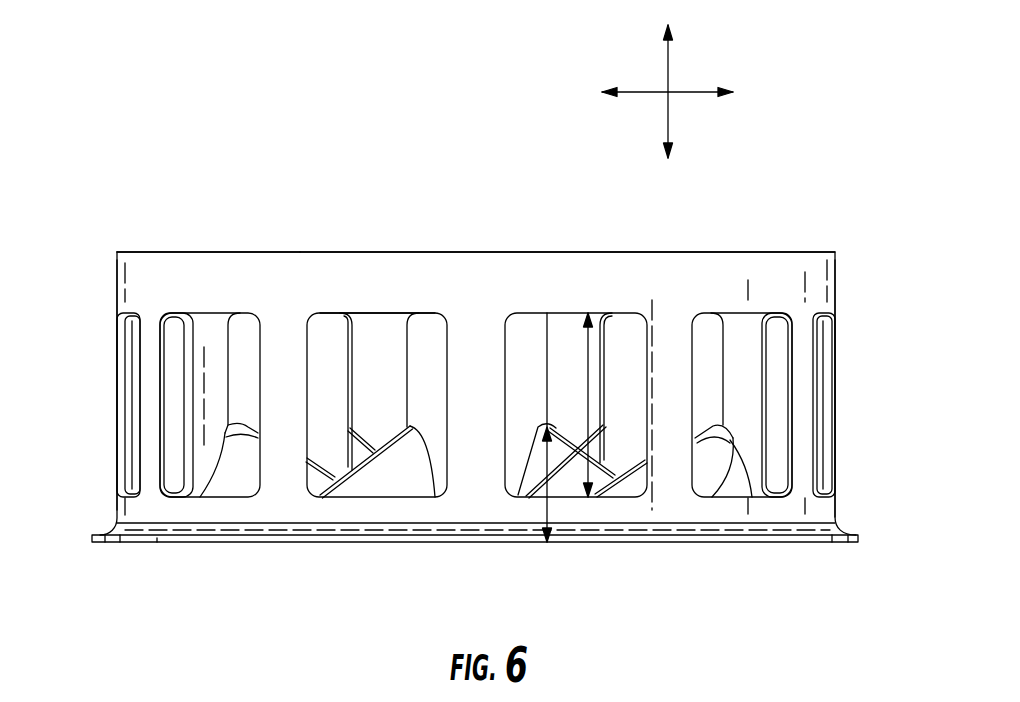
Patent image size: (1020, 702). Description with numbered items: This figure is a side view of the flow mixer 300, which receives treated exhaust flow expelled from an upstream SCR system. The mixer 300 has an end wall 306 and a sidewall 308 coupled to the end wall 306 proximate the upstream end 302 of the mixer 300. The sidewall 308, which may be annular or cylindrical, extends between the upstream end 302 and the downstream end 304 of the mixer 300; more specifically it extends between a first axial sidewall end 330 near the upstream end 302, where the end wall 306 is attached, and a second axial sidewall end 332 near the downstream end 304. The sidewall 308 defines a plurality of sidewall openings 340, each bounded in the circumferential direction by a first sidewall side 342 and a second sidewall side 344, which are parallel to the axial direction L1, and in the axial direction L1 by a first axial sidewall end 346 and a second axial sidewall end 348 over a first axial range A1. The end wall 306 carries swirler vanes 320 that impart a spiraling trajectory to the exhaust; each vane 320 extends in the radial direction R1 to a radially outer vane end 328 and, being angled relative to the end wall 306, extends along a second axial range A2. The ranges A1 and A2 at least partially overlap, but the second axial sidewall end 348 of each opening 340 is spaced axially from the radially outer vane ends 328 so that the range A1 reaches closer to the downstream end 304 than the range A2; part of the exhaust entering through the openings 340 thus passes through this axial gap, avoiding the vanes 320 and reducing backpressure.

The flow mixer 300 is at (158, 128).
The upstream end 302 is at (832, 545).
The downstream end 304 is at (757, 252).
The end wall 306 is at (288, 556).
The sidewall 308 is at (117, 292).
The swirler vanes 320 is at (368, 480).
The radially outer vane end 328 is at (720, 427).
The first axial sidewall end 330 is at (837, 517).
The second axial sidewall end 332 is at (477, 211).
The sidewall openings 340 is at (525, 305).
The first sidewall side 342 is at (308, 418).
The second sidewall side 344 is at (446, 381).
The first axial sidewall end 346 is at (413, 497).
The second axial sidewall end 348 is at (373, 315).
The first axial range A1 is at (590, 393).
The second axial range A2 is at (545, 467).
The axial direction L1 is at (668, 67).
The radial direction R1 is at (639, 92).